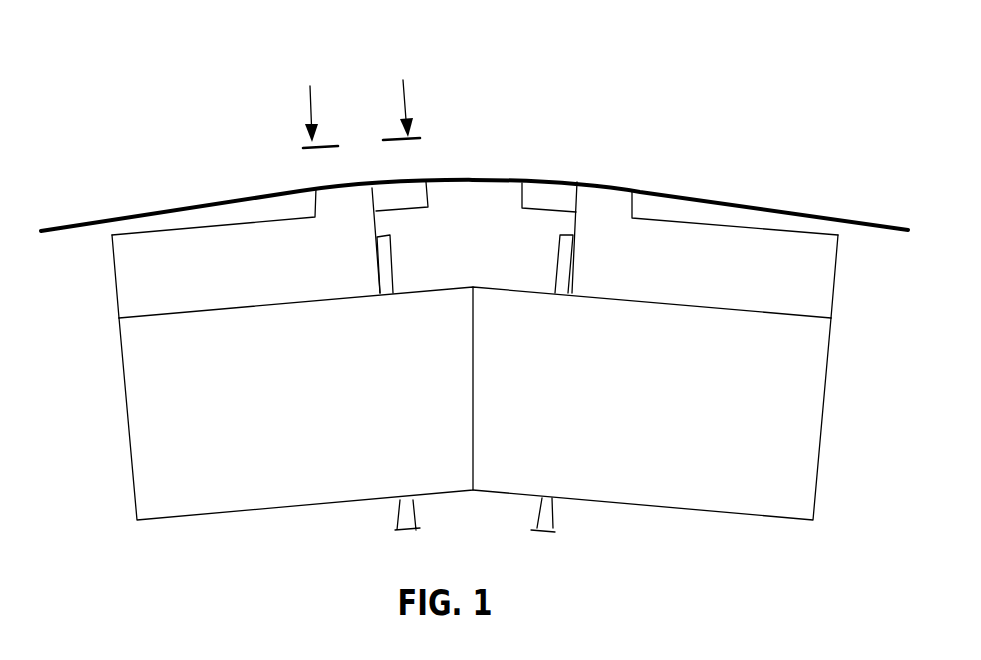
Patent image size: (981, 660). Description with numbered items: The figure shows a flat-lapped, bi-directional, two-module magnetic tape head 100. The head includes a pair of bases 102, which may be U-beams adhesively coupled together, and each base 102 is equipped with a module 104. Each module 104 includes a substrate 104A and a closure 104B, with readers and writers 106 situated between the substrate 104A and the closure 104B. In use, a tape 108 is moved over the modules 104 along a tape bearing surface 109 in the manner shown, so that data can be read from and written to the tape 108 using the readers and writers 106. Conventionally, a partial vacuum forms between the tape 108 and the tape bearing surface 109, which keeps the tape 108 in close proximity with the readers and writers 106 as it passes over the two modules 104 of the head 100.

The magnetic tape head 100 is at (235, 151).
The base 102 is at (122, 395).
The module 104 is at (117, 290).
The substrate 104A is at (183, 258).
The closure 104B is at (520, 198).
The readers and writers 106 is at (582, 179).
The tape 108 is at (833, 219).
The tape bearing surface 109 is at (337, 184).